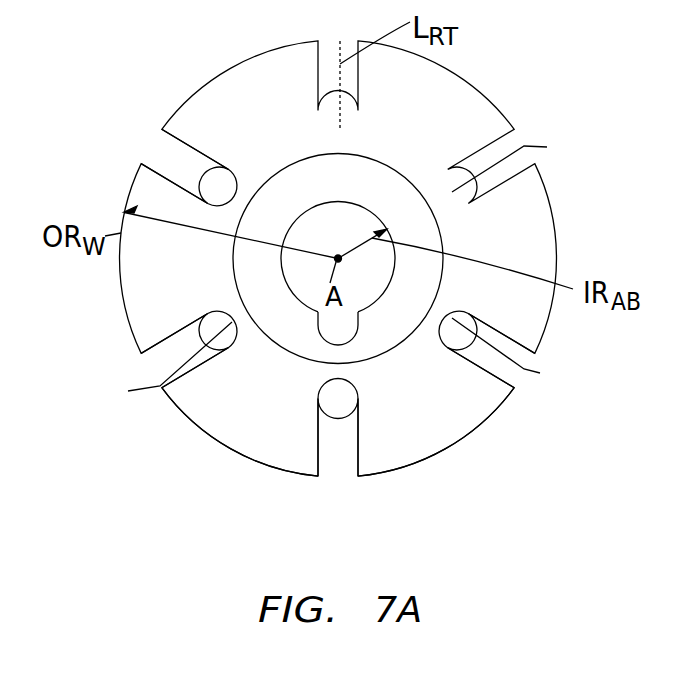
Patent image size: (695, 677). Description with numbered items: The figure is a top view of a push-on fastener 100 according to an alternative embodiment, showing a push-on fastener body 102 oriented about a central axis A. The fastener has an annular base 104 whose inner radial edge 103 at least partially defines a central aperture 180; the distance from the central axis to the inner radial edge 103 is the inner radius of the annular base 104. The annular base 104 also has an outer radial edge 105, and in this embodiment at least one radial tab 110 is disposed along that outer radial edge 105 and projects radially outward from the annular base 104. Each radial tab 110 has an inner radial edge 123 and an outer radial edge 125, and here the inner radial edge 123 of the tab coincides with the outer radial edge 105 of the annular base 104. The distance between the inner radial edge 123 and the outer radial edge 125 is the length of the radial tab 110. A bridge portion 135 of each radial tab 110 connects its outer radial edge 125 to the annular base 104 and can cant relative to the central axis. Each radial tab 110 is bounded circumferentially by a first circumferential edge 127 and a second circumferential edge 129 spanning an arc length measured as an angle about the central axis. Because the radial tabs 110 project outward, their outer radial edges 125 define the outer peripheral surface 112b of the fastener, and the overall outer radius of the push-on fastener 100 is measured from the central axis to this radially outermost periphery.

The push-on fastener 100 is at (504, 53).
The push-on fastener body 102 is at (506, 117).
The inner radial edge 103 is at (330, 343).
The annular base 104 is at (337, 255).
The outer radial edge 105 is at (509, 352).
The radial tab 110 is at (448, 450).
The outer peripheral surface 112b is at (208, 440).
The inner radial edge 123 is at (339, 269).
The outer radial edge 125 is at (556, 239).
The first circumferential edge 127 is at (140, 348).
The second circumferential edge 129 is at (140, 165).
The bridge portion 135 is at (342, 458).
The aperture 180 is at (255, 246).